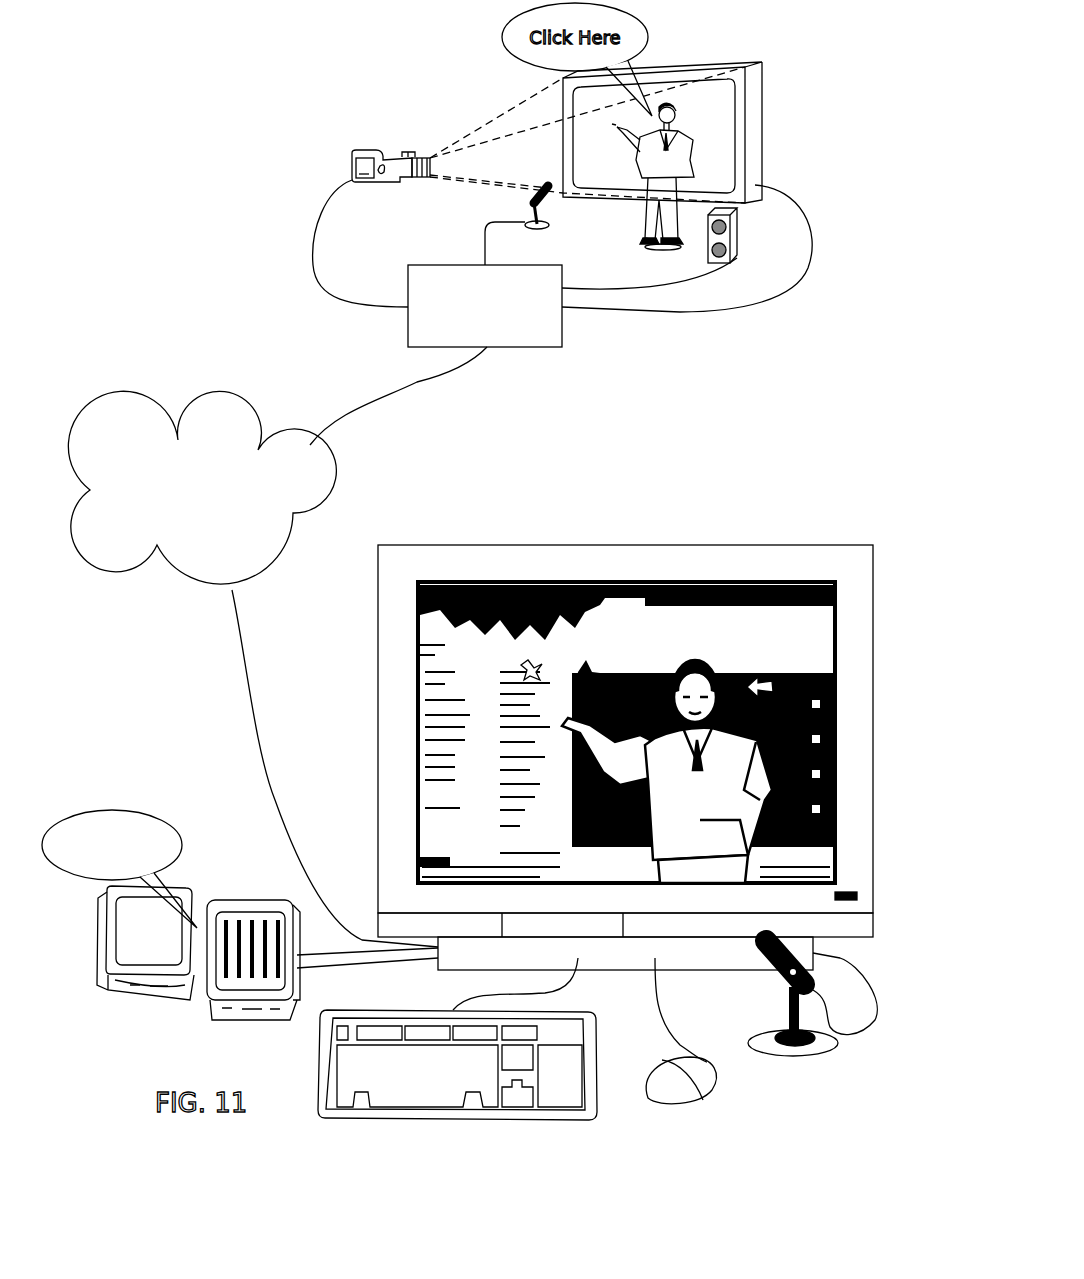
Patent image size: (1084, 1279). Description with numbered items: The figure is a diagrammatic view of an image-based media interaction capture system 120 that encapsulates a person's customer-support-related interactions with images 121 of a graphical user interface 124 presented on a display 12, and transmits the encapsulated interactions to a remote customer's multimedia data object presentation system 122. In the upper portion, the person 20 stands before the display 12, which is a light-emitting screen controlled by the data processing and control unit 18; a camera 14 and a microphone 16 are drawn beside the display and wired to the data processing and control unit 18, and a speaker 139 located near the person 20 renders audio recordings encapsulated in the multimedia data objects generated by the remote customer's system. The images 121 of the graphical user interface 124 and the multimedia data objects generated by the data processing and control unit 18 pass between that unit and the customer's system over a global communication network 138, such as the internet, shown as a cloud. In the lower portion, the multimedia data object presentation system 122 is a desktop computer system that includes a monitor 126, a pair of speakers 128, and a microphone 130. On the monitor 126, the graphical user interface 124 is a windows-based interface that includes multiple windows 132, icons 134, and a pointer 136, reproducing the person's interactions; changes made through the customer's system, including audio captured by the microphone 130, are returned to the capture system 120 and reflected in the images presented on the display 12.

The display 12 is at (662, 120).
The video camera 14 is at (355, 153).
The microphone 16 is at (552, 227).
The data processing and control unit 18 is at (440, 265).
The person 20 is at (694, 123).
The image-based media interaction capture system 120 is at (418, 94).
The images 121 is at (613, 178).
The multimedia data object presentation system 122 is at (168, 694).
The graphical user interface 124 is at (626, 732).
The monitor 126 is at (644, 545).
The pair of speakers 128 is at (203, 883).
The microphone 130 is at (787, 1008).
The windows 132 is at (532, 667).
The icons 134 is at (626, 612).
The pointer 136 is at (779, 684).
The global communication network 138 is at (345, 481).
The speaker 139 is at (737, 228).